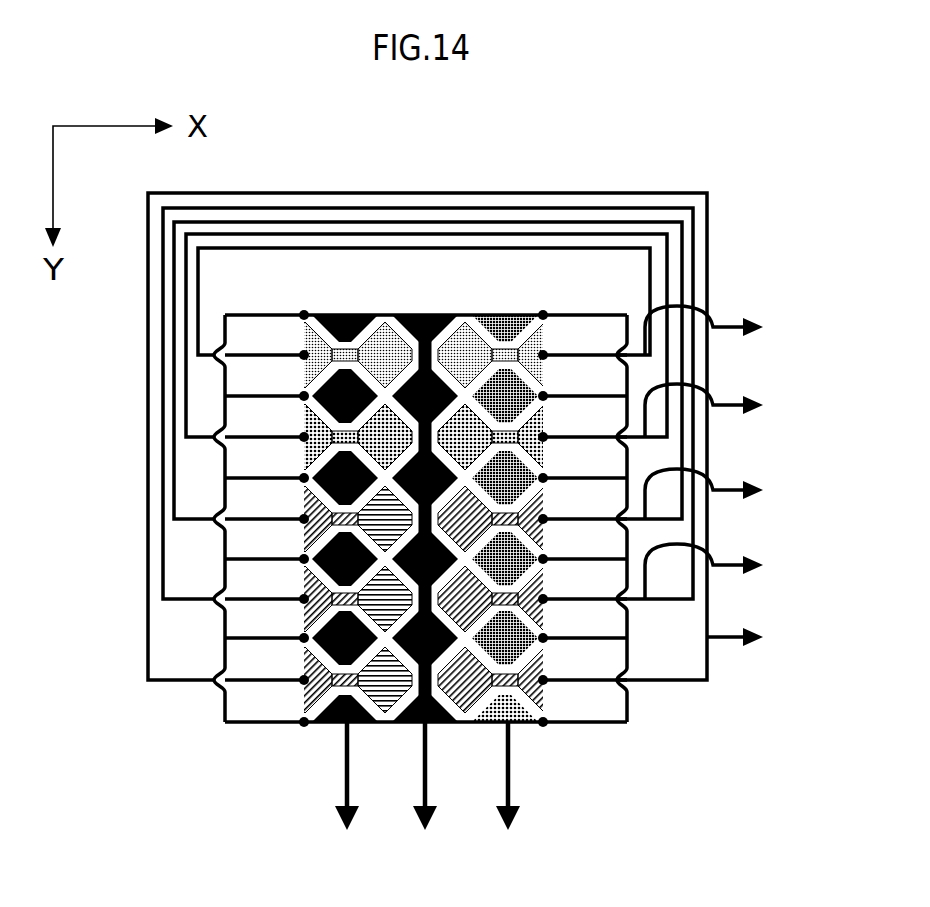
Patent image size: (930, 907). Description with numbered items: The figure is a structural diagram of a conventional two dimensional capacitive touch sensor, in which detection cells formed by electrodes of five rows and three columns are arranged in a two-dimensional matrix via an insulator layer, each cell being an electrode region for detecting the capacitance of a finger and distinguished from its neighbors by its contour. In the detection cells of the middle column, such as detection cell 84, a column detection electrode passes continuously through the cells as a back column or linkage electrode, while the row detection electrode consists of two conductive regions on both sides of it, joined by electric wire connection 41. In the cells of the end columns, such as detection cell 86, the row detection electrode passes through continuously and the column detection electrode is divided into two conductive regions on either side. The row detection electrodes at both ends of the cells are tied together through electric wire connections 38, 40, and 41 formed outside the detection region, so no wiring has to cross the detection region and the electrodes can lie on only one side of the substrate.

The electric wire connection 38 is at (200, 358).
The electric wire connection 40 is at (225, 712).
The electric wire connection 41 is at (631, 652).
The detection cell 84 is at (436, 312).
The detection cell 86 is at (501, 312).